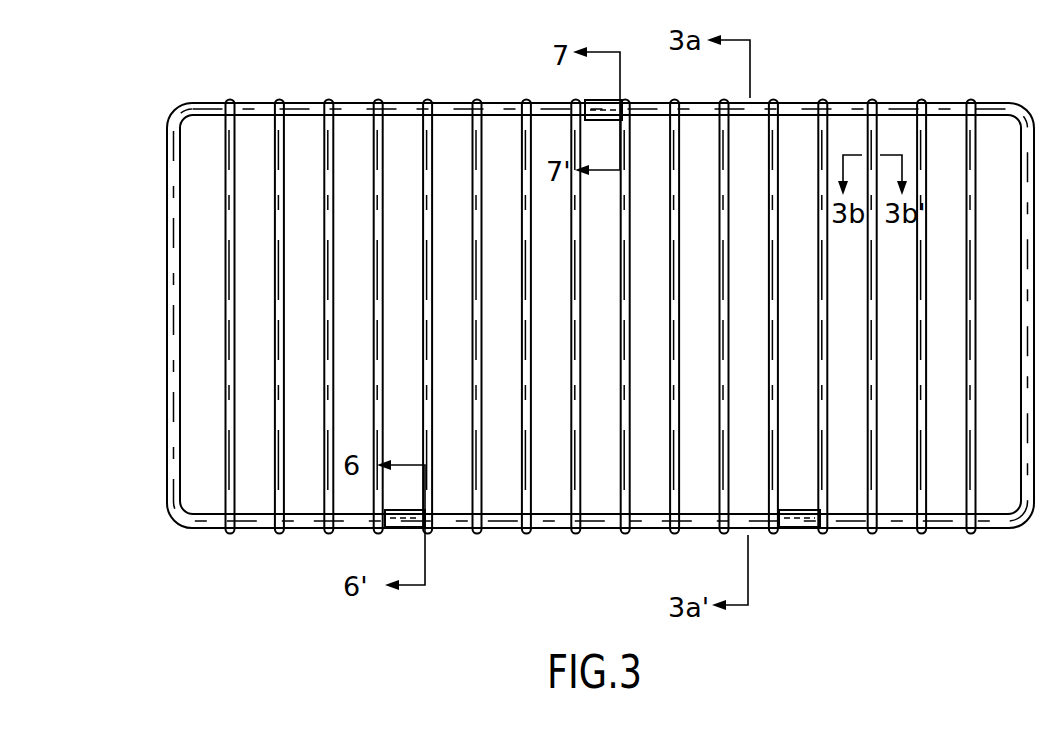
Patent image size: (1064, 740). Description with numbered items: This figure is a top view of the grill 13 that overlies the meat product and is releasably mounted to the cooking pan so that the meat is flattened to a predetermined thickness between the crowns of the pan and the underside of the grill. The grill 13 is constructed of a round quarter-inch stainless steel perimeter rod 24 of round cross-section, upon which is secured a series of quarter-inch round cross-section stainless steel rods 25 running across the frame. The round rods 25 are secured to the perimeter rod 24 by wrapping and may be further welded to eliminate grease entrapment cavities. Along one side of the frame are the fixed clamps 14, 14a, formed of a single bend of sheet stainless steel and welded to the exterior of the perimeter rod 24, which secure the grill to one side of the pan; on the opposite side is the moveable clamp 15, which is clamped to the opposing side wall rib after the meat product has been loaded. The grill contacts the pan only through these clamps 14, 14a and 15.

The perimeter rod 24 is at (167, 298).
The grill 13 is at (714, 300).
The stainless steel rods 25 is at (878, 131).
The moveable clamp 15 is at (597, 101).
The fixed clamp 14 is at (388, 531).
The fixed clamp 14a is at (793, 531).